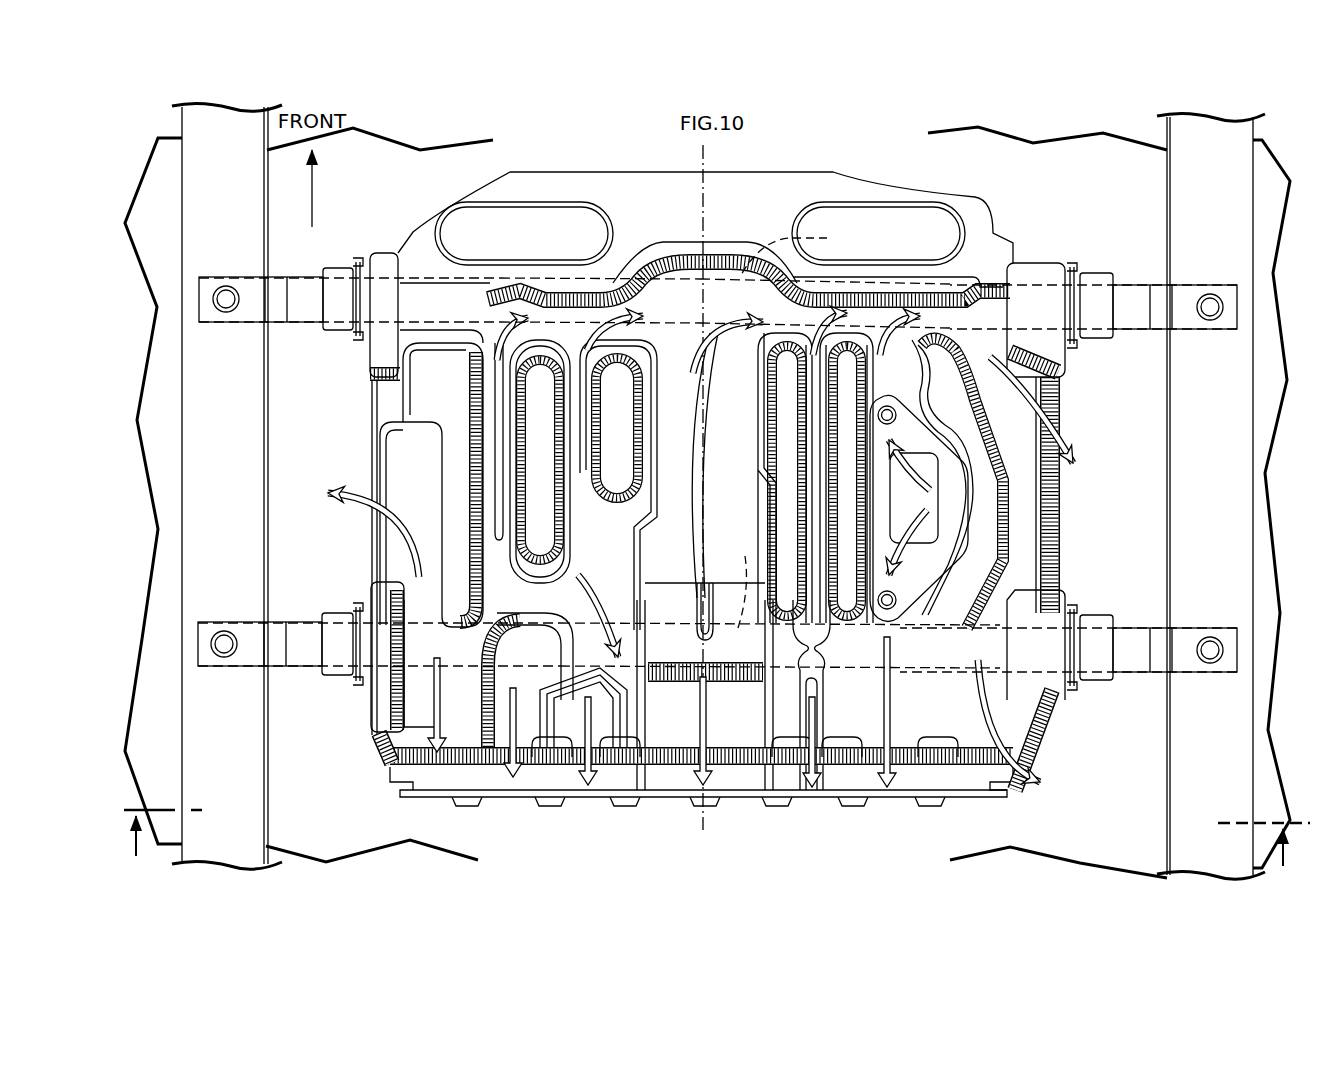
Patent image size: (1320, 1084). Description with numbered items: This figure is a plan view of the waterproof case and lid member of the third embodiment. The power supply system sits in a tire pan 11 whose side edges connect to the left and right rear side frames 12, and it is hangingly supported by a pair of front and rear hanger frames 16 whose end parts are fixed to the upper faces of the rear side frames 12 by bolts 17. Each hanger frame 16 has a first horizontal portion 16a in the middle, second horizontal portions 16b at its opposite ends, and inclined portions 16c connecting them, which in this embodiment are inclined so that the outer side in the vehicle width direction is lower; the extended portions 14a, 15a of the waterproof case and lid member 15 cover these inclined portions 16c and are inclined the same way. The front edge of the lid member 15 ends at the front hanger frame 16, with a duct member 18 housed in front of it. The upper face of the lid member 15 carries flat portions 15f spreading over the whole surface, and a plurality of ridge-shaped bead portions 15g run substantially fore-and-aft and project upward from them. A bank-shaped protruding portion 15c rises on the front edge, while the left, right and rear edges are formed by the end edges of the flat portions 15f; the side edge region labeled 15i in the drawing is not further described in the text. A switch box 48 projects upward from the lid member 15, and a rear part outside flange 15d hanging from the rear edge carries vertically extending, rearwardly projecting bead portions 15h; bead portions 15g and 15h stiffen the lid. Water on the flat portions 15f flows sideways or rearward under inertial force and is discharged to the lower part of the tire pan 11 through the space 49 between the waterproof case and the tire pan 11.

The tire pan 11 is at (1064, 195).
The rear side frame 12 is at (244, 444).
The extended portion of waterproof case 14a is at (715, 521).
The lid member 15 is at (715, 506).
The extended portion of lid member 15a is at (328, 310).
The protruding portion 15c is at (717, 250).
The rear part outside flange 15d is at (662, 797).
The flat portion 15f is at (390, 491).
The bead portion 15g is at (415, 401).
The bead portion 15h is at (467, 808).
The side wall 15i is at (370, 531).
The hanger frame 16 is at (717, 489).
The first horizontal portion 16a is at (717, 449).
The second horizontal portion 16b is at (228, 276).
The inclined portion 16c is at (336, 267).
The bolt 17 is at (226, 312).
The duct member 18 is at (715, 492).
The switch box 48 is at (895, 506).
The space 49 is at (313, 431).